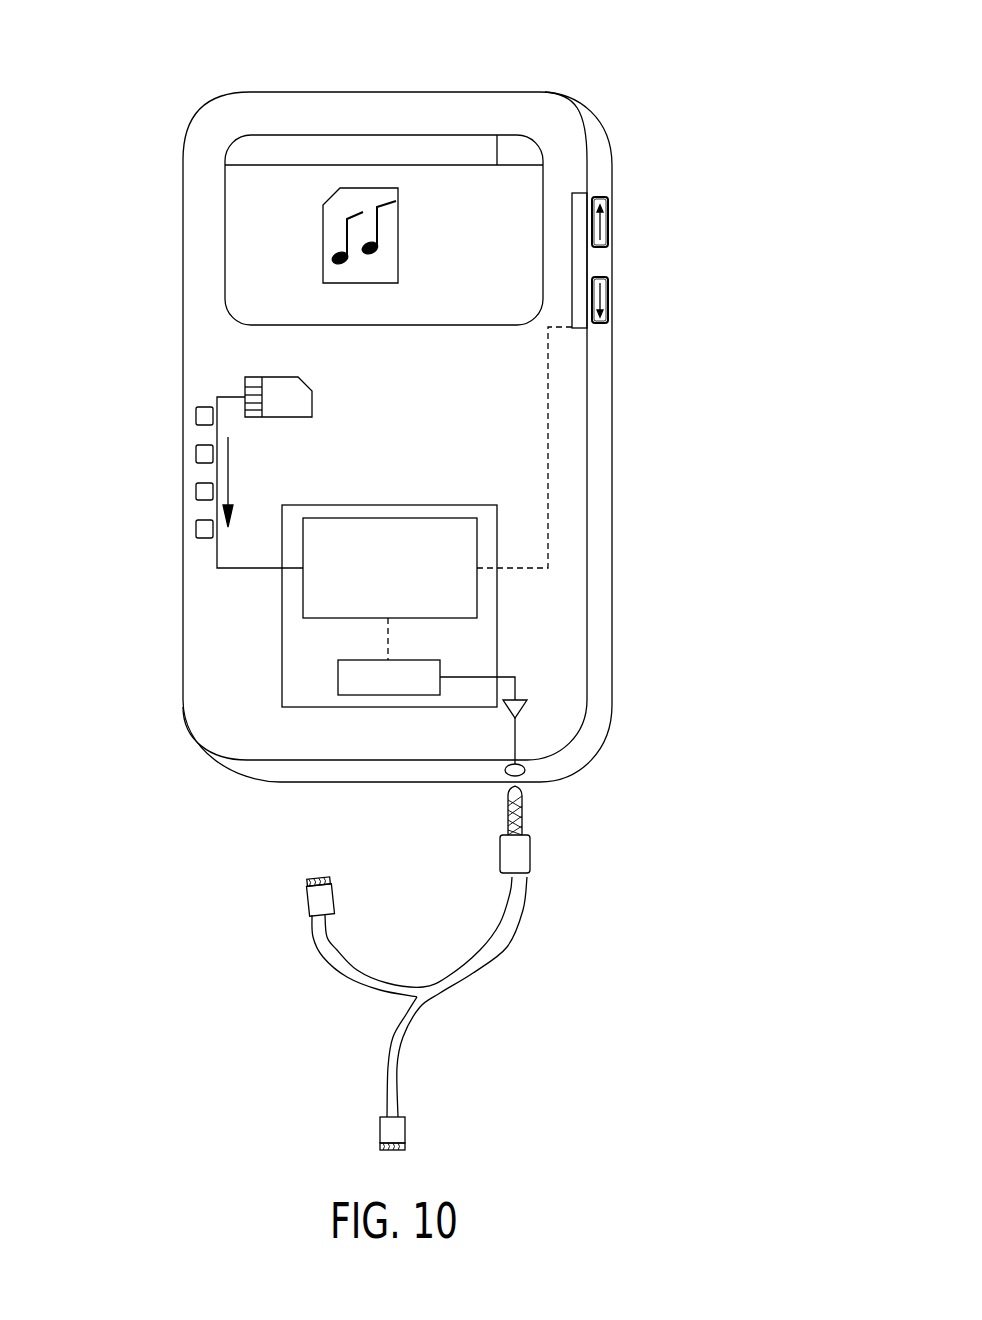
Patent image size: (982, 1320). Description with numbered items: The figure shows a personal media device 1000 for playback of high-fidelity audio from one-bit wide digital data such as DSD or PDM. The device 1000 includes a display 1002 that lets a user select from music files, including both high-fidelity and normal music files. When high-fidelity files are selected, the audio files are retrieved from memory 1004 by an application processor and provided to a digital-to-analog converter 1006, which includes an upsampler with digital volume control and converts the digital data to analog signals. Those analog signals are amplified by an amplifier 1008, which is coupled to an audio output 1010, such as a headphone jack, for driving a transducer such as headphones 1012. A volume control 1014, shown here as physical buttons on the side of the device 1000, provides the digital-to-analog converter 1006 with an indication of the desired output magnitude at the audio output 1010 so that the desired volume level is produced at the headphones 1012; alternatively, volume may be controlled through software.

The personal media device 1000 is at (515, 91).
The display 1002 is at (225, 237).
The memory 1004 is at (313, 402).
The digital-to-analog converter 1006 is at (282, 667).
The amplifier 1008 is at (508, 710).
The audio output 1010 is at (525, 773).
The headphones 1012 is at (522, 852).
The volume control 1014 is at (610, 293).